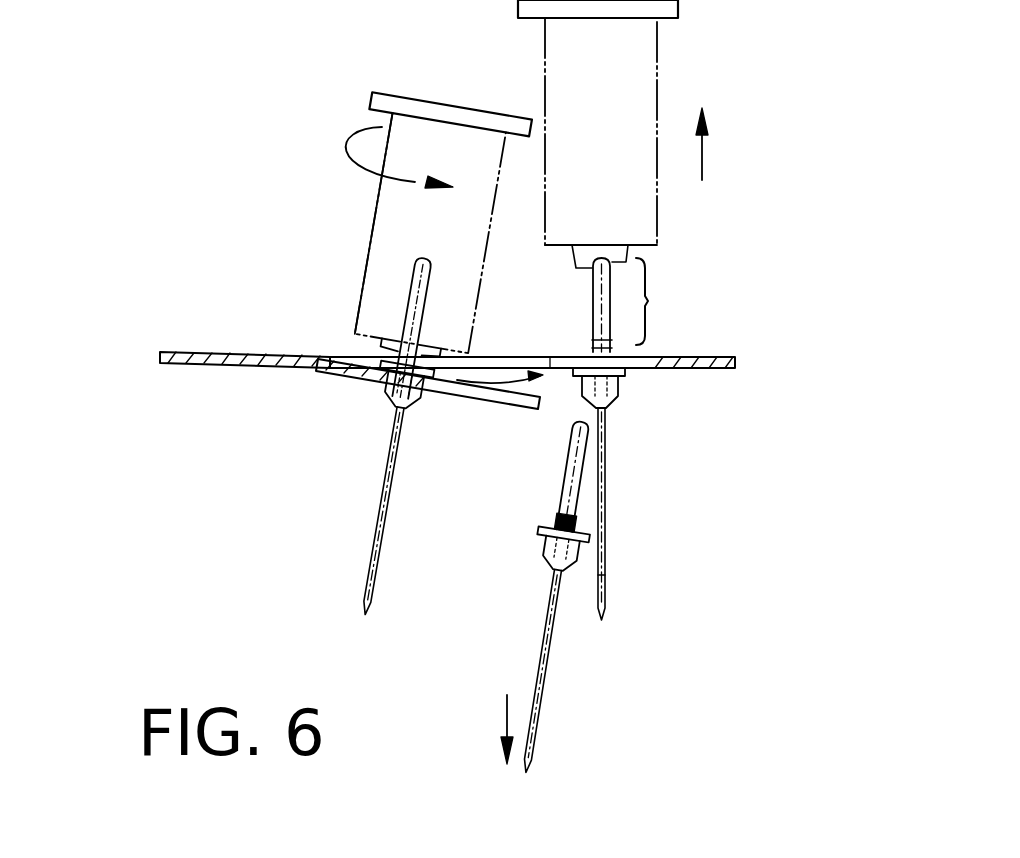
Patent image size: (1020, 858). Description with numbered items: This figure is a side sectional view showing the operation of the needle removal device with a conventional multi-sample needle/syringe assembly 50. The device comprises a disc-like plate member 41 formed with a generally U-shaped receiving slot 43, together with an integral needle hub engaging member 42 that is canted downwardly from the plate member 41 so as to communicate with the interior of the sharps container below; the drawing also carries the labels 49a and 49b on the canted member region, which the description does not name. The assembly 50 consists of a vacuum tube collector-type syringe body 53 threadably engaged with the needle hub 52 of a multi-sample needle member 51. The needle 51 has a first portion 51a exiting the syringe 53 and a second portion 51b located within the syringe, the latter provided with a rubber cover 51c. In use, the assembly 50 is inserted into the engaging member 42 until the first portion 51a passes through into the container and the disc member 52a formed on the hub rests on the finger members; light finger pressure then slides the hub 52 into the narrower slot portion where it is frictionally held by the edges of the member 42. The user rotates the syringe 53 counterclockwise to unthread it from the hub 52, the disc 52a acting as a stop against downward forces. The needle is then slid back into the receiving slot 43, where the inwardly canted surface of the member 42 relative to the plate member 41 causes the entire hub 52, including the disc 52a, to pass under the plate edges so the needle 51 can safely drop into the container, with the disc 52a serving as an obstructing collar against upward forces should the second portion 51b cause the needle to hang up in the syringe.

The plate member 41 is at (166, 366).
The needle hub engaging member 42 is at (510, 397).
The receiving slot 43 is at (646, 357).
The slot 49a is at (466, 392).
The hub 49b is at (390, 384).
The multi-sample needle/syringe assembly 50 is at (381, 355).
The multi-sample needle member 51 is at (606, 526).
The first needle portion 51a is at (604, 580).
The second needle portion 51b is at (613, 176).
The rubber cover 51c is at (418, 320).
The needle hub 52 is at (616, 385).
The disc member 52a is at (540, 532).
The syringe body 53 is at (378, 269).